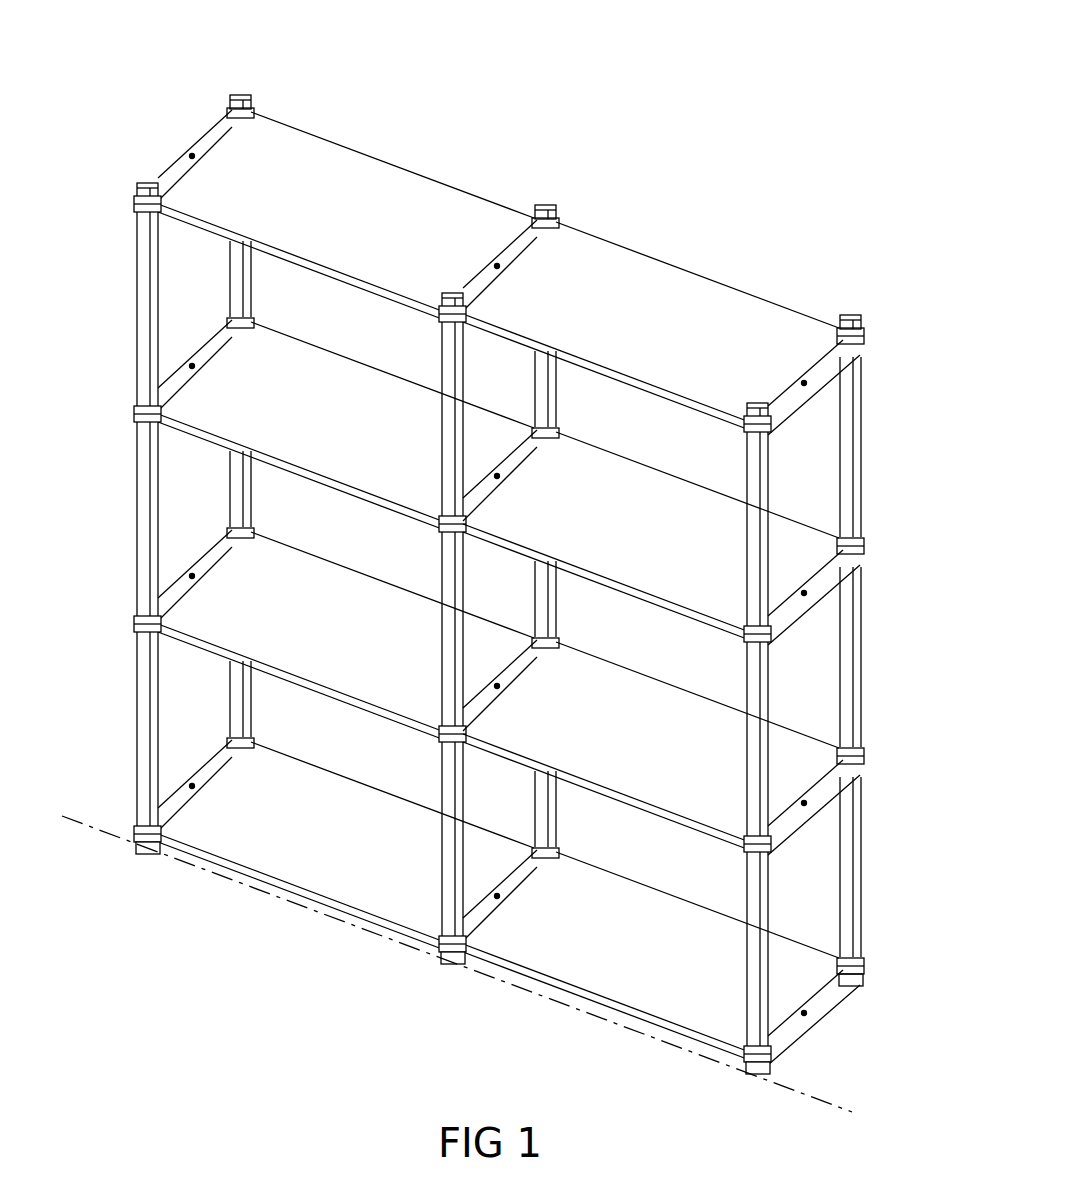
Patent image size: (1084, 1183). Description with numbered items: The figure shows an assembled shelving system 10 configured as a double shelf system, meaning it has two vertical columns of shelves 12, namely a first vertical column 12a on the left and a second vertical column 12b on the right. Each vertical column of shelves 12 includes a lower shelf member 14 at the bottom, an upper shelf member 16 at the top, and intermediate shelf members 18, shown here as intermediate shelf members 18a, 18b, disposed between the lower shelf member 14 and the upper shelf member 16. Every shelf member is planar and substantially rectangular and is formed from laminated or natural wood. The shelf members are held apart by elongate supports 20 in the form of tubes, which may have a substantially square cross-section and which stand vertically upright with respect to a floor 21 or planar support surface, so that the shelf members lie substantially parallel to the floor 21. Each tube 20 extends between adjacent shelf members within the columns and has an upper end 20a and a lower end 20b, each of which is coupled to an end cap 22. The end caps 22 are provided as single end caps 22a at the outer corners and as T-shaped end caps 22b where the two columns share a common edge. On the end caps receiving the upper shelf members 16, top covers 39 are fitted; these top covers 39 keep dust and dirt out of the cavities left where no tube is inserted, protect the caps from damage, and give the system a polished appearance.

The shelving system 10 is at (491, 577).
The vertical column of shelves 12 is at (500, 538).
The first vertical column 12a is at (320, 524).
The second vertical column 12b is at (691, 636).
The lower shelf member 14 is at (290, 862).
The upper shelf member 16 is at (509, 250).
The intermediate shelf member 18 is at (810, 546).
The intermediate shelf member 18a is at (230, 378).
The intermediate shelf member 18b is at (232, 583).
The elongate support 20 is at (832, 701).
The upper end 20a is at (857, 788).
The lower end 20b is at (857, 960).
The floor 21 is at (808, 1101).
The end cap 22 is at (509, 260).
The single end cap 22a is at (183, 160).
The T-shaped end cap 22b is at (523, 262).
The top cover 39 is at (240, 100).